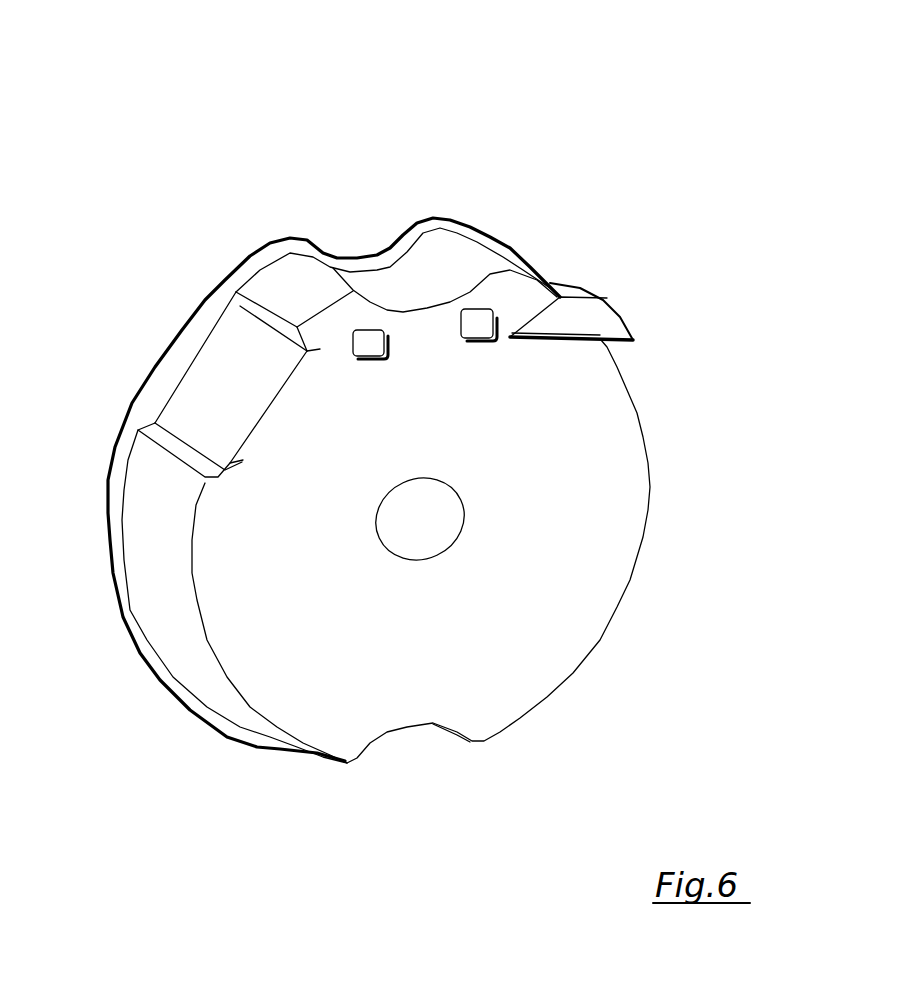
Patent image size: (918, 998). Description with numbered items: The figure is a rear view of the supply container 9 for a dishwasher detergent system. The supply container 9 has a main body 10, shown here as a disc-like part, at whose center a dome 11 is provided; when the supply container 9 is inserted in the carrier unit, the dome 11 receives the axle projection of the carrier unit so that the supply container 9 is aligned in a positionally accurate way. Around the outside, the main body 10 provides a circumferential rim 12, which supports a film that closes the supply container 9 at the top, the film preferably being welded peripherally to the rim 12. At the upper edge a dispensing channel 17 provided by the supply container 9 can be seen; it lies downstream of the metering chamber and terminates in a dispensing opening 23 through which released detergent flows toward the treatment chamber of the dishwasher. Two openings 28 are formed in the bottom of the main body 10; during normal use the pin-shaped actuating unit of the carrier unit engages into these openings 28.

The supply container 9 is at (430, 421).
The main body 10 is at (603, 465).
The dome 11 is at (423, 513).
The circumferential rim 12 is at (167, 673).
The dispensing channel 17 is at (578, 313).
The dispensing opening 23 is at (620, 317).
The openings 28 is at (478, 322).